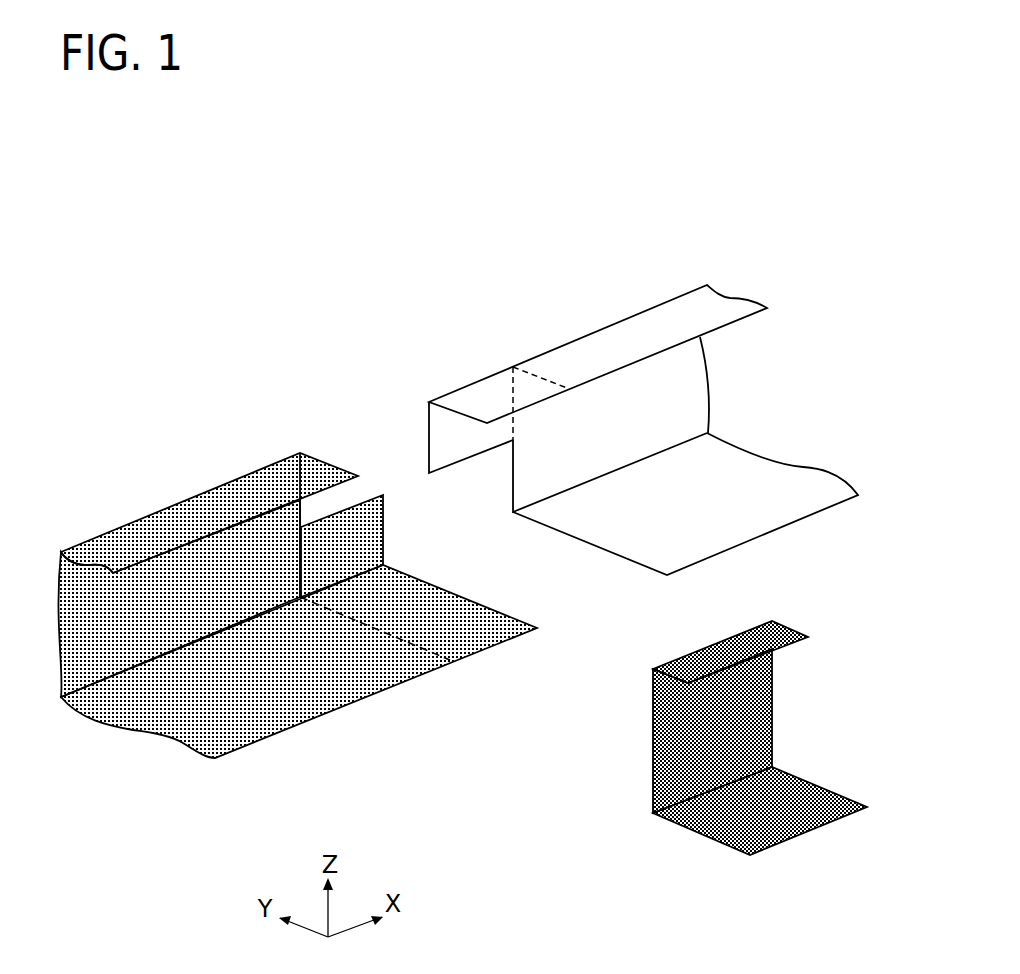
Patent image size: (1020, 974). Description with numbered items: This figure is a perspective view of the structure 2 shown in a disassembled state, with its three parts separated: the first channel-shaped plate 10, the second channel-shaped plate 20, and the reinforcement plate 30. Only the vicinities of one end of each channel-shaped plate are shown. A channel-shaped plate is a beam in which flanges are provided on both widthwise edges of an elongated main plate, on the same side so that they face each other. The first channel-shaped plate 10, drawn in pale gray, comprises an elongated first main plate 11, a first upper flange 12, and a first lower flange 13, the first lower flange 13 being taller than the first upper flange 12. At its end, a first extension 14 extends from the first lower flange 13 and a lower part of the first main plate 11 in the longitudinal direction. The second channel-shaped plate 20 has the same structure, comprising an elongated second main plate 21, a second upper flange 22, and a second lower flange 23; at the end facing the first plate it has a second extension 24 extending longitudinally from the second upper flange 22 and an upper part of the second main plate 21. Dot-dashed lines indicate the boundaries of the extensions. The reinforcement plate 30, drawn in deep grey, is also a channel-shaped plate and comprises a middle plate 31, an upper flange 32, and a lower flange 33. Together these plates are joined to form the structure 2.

The structure 2 is at (232, 255).
The first channel-shaped plate 10 is at (110, 517).
The first main plate 11 is at (63, 605).
The first upper flange 12 is at (197, 503).
The first lower flange 13 is at (120, 727).
The first extension 14 is at (545, 634).
The second channel-shaped plate 20 is at (582, 318).
The second main plate 21 is at (703, 385).
The second upper flange 22 is at (687, 298).
The second lower flange 23 is at (800, 475).
The second extension 24 is at (510, 362).
The reinforcement plate 30 is at (628, 810).
The middle plate 31 is at (762, 702).
The upper flange 32 is at (703, 655).
The lower flange 33 is at (773, 833).